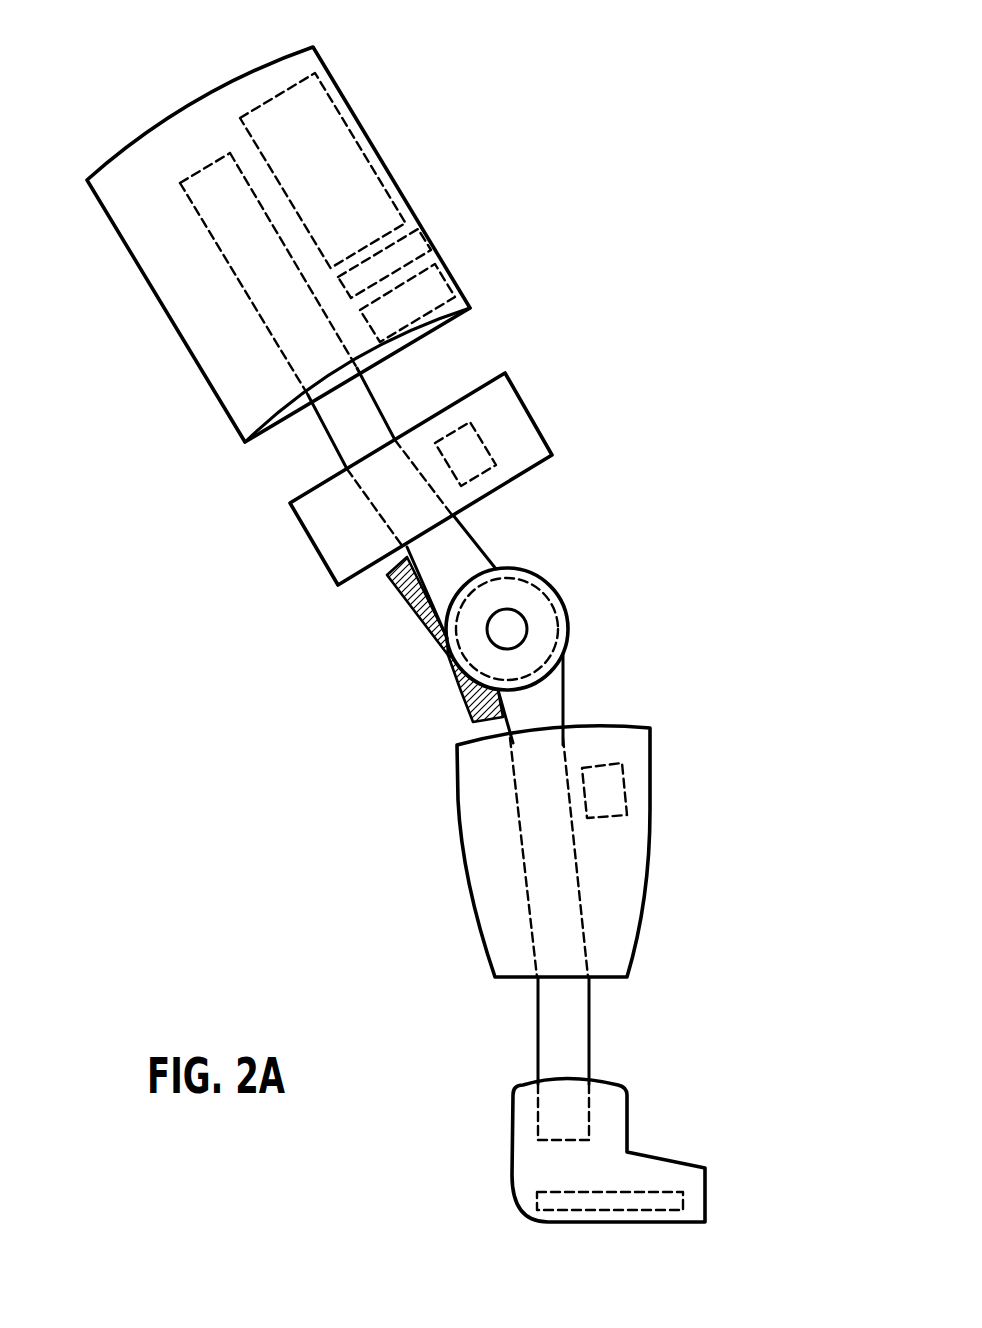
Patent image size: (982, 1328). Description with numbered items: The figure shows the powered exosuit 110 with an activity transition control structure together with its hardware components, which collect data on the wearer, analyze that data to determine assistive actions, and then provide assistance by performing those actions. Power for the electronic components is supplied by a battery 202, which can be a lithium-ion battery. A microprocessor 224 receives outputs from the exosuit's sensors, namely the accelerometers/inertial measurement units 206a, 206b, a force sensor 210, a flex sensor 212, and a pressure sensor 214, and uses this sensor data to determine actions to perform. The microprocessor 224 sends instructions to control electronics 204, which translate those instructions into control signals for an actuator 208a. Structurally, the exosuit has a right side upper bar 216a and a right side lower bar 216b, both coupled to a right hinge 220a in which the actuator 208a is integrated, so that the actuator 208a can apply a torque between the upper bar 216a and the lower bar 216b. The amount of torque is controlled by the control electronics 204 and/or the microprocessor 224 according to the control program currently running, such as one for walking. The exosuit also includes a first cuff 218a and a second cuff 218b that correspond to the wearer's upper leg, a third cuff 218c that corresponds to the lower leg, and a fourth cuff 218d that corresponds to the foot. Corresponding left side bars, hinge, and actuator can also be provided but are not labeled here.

The powered exosuit 110 is at (127, 81).
The battery 202 is at (353, 137).
The microprocessor 224 is at (405, 247).
The control electronics 204 is at (442, 288).
The accelerometer/inertial measurement unit 206a is at (482, 443).
The accelerometer/inertial measurement unit 206b is at (623, 788).
The right hinge 220a is at (533, 573).
The actuator 208a is at (547, 603).
The force sensor 210 is at (508, 635).
The flex sensor 212 is at (417, 617).
The pressure sensor 214 is at (617, 1195).
The right side upper bar 216a is at (323, 438).
The right side lower bar 216b is at (538, 1023).
The first cuff 218a is at (158, 303).
The second cuff 218b is at (307, 535).
The third cuff 218c is at (457, 797).
The fourth cuff 218d is at (512, 1112).